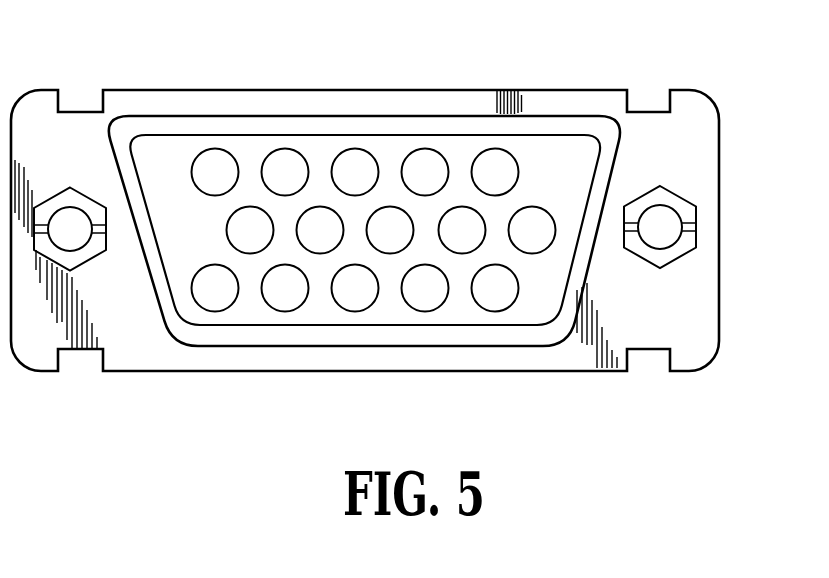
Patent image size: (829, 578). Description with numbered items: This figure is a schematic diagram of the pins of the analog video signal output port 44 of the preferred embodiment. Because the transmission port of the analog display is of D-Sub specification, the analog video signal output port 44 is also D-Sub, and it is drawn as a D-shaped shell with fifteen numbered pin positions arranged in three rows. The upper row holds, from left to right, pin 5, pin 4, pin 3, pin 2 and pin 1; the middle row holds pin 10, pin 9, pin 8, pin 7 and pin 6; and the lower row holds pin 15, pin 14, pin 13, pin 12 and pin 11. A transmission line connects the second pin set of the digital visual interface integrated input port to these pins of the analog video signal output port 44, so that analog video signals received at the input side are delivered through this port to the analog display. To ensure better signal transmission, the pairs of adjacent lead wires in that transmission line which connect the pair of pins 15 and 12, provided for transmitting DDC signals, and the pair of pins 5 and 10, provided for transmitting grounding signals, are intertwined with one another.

The analog video signal output port 44 is at (693, 109).
The pin 1 is at (495, 172).
The pin 2 is at (425, 172).
The pin 3 is at (355, 172).
The pin 4 is at (285, 172).
The pin 5 is at (215, 172).
The pin 6 is at (532, 230).
The pin 7 is at (462, 230).
The pin 8 is at (390, 230).
The pin 9 is at (320, 230).
The pin 10 is at (250, 230).
The pin 11 is at (495, 288).
The pin 12 is at (425, 288).
The pin 13 is at (355, 288).
The pin 14 is at (285, 288).
The pin 15 is at (215, 288).